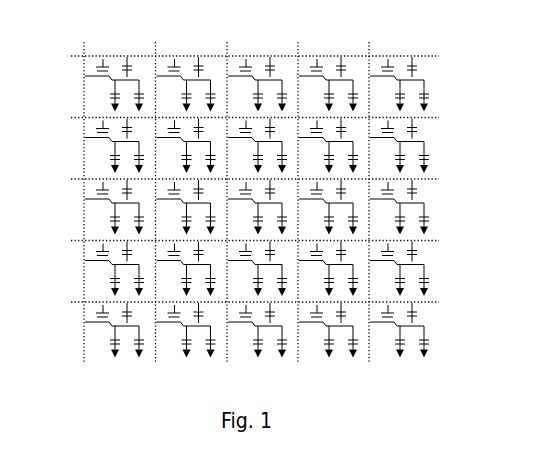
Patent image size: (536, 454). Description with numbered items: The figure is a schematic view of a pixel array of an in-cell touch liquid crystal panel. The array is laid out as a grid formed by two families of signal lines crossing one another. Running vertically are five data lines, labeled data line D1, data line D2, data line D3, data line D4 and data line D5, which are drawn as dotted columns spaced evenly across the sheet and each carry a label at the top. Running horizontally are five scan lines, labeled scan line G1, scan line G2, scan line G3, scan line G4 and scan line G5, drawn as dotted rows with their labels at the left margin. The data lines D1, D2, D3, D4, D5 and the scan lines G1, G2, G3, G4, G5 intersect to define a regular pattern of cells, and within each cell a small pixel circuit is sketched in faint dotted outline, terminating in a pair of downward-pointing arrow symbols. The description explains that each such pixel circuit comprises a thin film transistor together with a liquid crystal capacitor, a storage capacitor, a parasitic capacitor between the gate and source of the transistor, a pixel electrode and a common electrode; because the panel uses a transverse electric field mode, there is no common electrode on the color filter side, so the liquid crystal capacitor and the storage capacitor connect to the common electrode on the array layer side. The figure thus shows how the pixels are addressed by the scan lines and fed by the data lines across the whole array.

The data line D1 is at (86, 195).
The data line D2 is at (158, 195).
The data line D3 is at (229, 195).
The data line D4 is at (300, 195).
The data line D5 is at (371, 195).
The scan line G1 is at (245, 50).
The scan line G2 is at (245, 112).
The scan line G3 is at (245, 173).
The scan line G4 is at (245, 235).
The scan line G5 is at (245, 296).